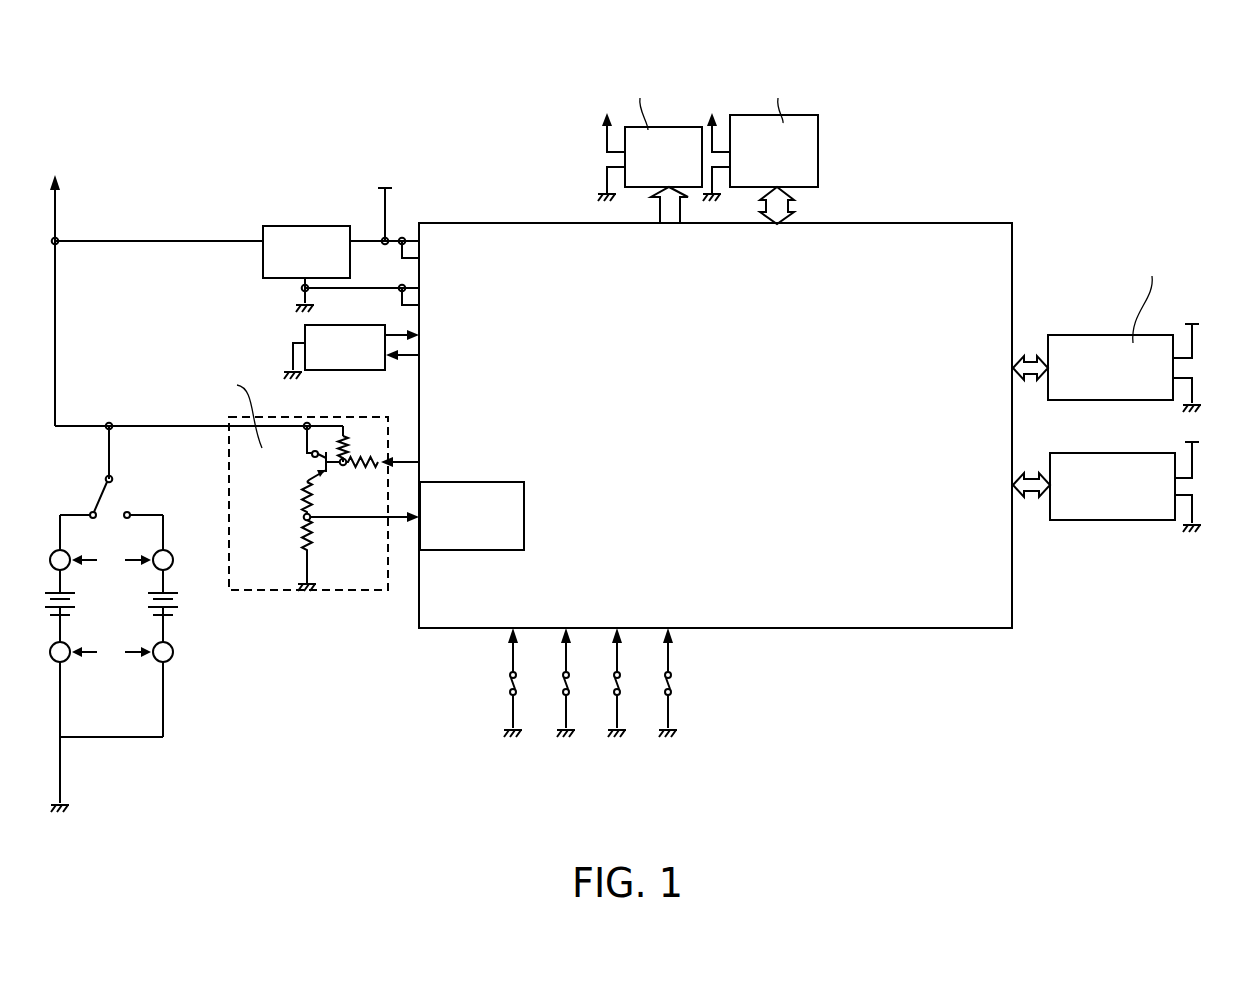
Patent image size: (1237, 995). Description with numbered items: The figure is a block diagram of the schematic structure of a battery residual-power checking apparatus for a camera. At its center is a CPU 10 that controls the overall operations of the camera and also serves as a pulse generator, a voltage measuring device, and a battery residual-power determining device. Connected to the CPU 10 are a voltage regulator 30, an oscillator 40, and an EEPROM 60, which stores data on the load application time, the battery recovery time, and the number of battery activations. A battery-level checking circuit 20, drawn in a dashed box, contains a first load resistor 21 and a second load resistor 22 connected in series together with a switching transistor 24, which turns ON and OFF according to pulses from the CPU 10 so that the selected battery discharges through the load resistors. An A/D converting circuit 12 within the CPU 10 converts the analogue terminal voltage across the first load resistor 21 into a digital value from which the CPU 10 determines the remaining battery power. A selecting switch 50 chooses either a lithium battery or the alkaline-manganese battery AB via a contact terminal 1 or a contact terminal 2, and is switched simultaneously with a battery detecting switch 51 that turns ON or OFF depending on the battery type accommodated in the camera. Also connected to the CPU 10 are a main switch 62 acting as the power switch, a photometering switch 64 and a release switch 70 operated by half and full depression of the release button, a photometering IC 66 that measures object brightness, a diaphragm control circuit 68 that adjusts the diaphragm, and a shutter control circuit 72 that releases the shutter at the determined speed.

The CPU 10 is at (925, 236).
The A/D converting circuit 12 is at (482, 482).
The battery-level checking circuit 20 is at (262, 590).
The first load resistor 21 is at (305, 540).
The second load resistor 22 is at (305, 505).
The switching transistor 24 is at (305, 470).
The voltage regulator 30 is at (327, 226).
The oscillator 40 is at (345, 370).
The selecting switch 50 is at (105, 487).
The battery detecting switch 51 is at (673, 679).
The EEPROM 60 is at (1080, 520).
The main switch 62 is at (504, 681).
The photometering switch 64 is at (558, 681).
The photometering IC 66 is at (1083, 335).
The diaphragm control circuit 68 is at (815, 146).
The release switch 70 is at (611, 681).
The shutter control circuit 72 is at (668, 133).
The contact terminal 1 is at (73, 589).
The contact terminal 2 is at (149, 588).
The alkaline-manganese battery AB is at (135, 663).